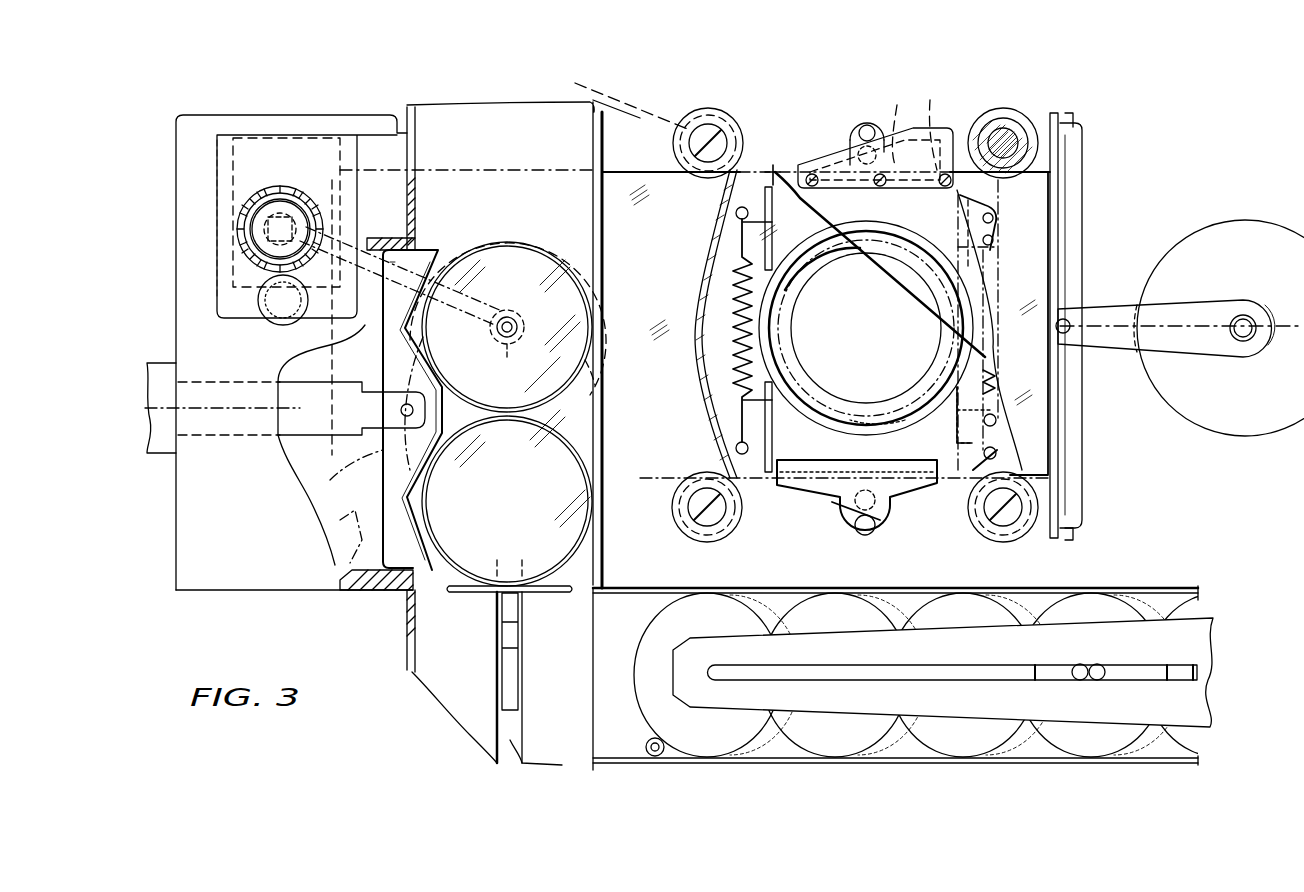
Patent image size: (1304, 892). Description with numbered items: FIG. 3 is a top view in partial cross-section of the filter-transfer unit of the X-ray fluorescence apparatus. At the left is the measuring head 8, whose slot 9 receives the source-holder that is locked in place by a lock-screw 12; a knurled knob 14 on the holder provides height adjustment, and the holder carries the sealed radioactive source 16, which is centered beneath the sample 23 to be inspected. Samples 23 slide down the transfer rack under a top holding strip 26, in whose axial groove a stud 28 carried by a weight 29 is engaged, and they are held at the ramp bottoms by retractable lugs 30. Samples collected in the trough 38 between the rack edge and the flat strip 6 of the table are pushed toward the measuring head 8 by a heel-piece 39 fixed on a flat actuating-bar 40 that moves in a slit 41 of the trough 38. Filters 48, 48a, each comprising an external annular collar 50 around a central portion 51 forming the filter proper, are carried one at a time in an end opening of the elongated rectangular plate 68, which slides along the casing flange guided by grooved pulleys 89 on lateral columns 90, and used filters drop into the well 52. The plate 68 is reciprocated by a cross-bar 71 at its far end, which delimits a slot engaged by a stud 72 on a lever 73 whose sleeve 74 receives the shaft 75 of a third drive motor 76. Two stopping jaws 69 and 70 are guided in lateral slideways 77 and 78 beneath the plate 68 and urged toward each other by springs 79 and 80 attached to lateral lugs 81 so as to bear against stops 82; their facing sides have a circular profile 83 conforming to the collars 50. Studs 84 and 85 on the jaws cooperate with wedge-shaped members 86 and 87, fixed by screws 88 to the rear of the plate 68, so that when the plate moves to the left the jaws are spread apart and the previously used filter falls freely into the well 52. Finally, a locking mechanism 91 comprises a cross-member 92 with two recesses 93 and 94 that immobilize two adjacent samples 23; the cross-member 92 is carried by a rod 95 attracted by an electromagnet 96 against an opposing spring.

The flat strip 6 is at (406, 643).
The measuring head 8 is at (172, 160).
The slot 9 is at (220, 165).
The lock-screw 12 is at (280, 320).
The knurled knob 14 is at (280, 200).
The sealed radioactive source 16 is at (505, 350).
The sample 23 is at (586, 240).
The top holding strip 26 is at (1212, 600).
The stud 28 is at (1090, 664).
The weight 29 is at (1055, 672).
The retractable lugs 30 is at (650, 748).
The trough 38 is at (596, 590).
The heel-piece 39 is at (550, 592).
The flat actuating-bar 40 is at (520, 675).
The slit 41 is at (520, 742).
The filter 48 is at (540, 232).
The pawl arc 48a is at (596, 392).
The external annular collar 50 is at (905, 400).
The central portion 51 is at (918, 344).
The well 52 is at (700, 342).
The elongated rectangular plate 68 is at (635, 190).
The retractable stopping jaw 69 is at (773, 168).
The retractable stopping jaw 70 is at (798, 495).
The cross-bar 71 is at (1062, 160).
The stud 72 is at (1066, 318).
The lever 73 is at (1102, 345).
The sleeve 74 is at (1265, 345).
The shaft 75 is at (1245, 315).
The third drive motor 76 is at (1240, 435).
The lateral slideway 77 is at (920, 121).
The lateral slideway 78 is at (960, 530).
The spring 79 is at (730, 283).
The spring 80 is at (995, 262).
The lateral lugs 81 is at (736, 212).
The stops 82 is at (850, 320).
The circular profile 83 is at (862, 300).
The stud 84 is at (866, 128).
The stud 85 is at (888, 540).
The wedge-shaped member 86 is at (900, 130).
The wedge-shaped member 87 is at (960, 530).
The screws 88 is at (1000, 118).
The grooved pulleys 89 is at (700, 115).
The lateral columns 90 is at (580, 86).
The sample locking mechanism 91 is at (383, 458).
The cross-member 92 is at (430, 578).
The recess 93 is at (383, 500).
The recess 94 is at (445, 310).
The rod 95 is at (360, 420).
The electromagnet 96 is at (160, 410).